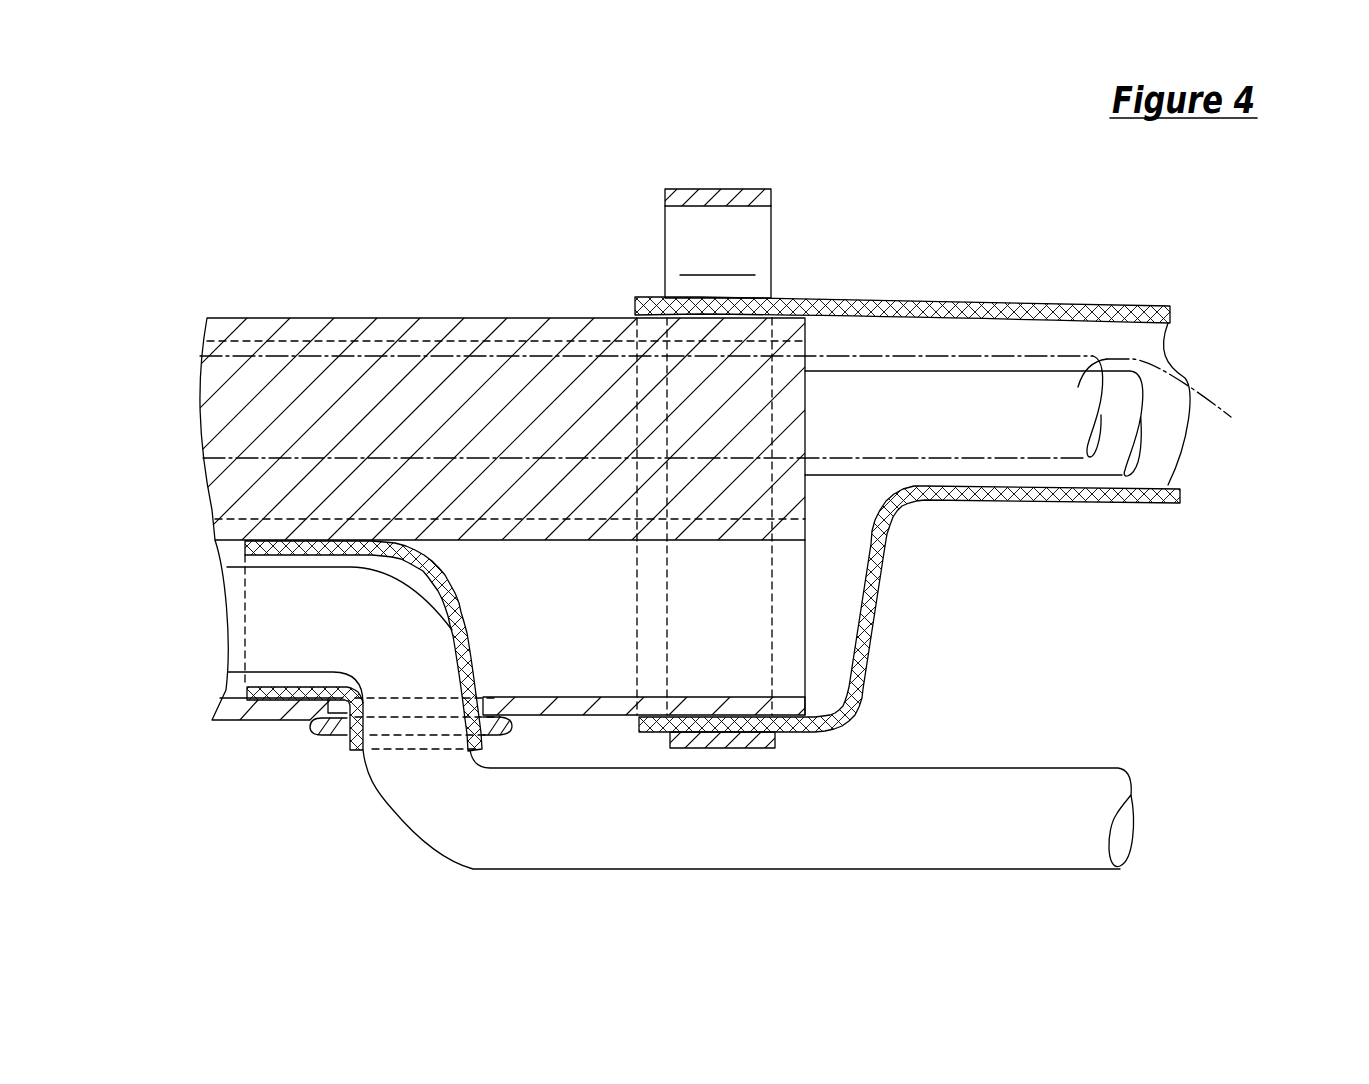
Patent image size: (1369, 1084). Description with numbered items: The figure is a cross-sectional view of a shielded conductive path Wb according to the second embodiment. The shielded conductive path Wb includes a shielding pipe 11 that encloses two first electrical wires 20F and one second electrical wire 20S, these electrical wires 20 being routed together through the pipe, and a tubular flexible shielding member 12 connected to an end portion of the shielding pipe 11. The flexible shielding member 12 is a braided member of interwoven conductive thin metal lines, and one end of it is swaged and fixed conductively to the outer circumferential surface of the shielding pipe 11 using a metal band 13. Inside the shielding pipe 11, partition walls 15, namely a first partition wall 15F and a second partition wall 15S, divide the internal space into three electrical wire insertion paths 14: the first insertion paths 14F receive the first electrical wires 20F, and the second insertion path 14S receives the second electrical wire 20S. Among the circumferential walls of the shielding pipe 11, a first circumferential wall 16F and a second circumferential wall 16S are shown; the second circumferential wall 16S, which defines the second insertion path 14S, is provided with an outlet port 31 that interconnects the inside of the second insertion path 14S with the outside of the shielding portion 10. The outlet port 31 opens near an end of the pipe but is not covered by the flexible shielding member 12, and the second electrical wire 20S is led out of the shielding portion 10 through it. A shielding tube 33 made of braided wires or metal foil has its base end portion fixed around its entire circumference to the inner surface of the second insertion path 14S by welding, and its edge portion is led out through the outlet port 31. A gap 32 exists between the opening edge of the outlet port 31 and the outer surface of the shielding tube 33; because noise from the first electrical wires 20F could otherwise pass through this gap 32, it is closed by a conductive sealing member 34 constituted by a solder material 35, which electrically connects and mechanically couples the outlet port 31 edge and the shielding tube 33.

The shielding portion 10 is at (772, 125).
The shielding pipe 11 is at (568, 320).
The flexible shielding member 12 is at (842, 297).
The metal band 13 is at (748, 748).
The electrical wire insertion paths 14 is at (983, 575).
The first insertion paths 14F is at (760, 512).
The second insertion path 14S is at (732, 608).
The partition walls 15 is at (103, 433).
The first partition wall 15F is at (278, 448).
The second partition wall 15S is at (262, 518).
The first circumferential wall 16F is at (352, 327).
The second circumferential wall 16S is at (256, 712).
The electrical wires 20 is at (1280, 405).
The first electrical wires 20F is at (1126, 411).
The second electrical wire 20S is at (1093, 771).
The outlet port 31 is at (363, 717).
The gap 32 is at (484, 752).
The shielding tube 33 is at (443, 587).
The sealing member 34 is at (500, 767).
The solder material 35 is at (490, 716).
The shielded conductive path Wb is at (458, 182).